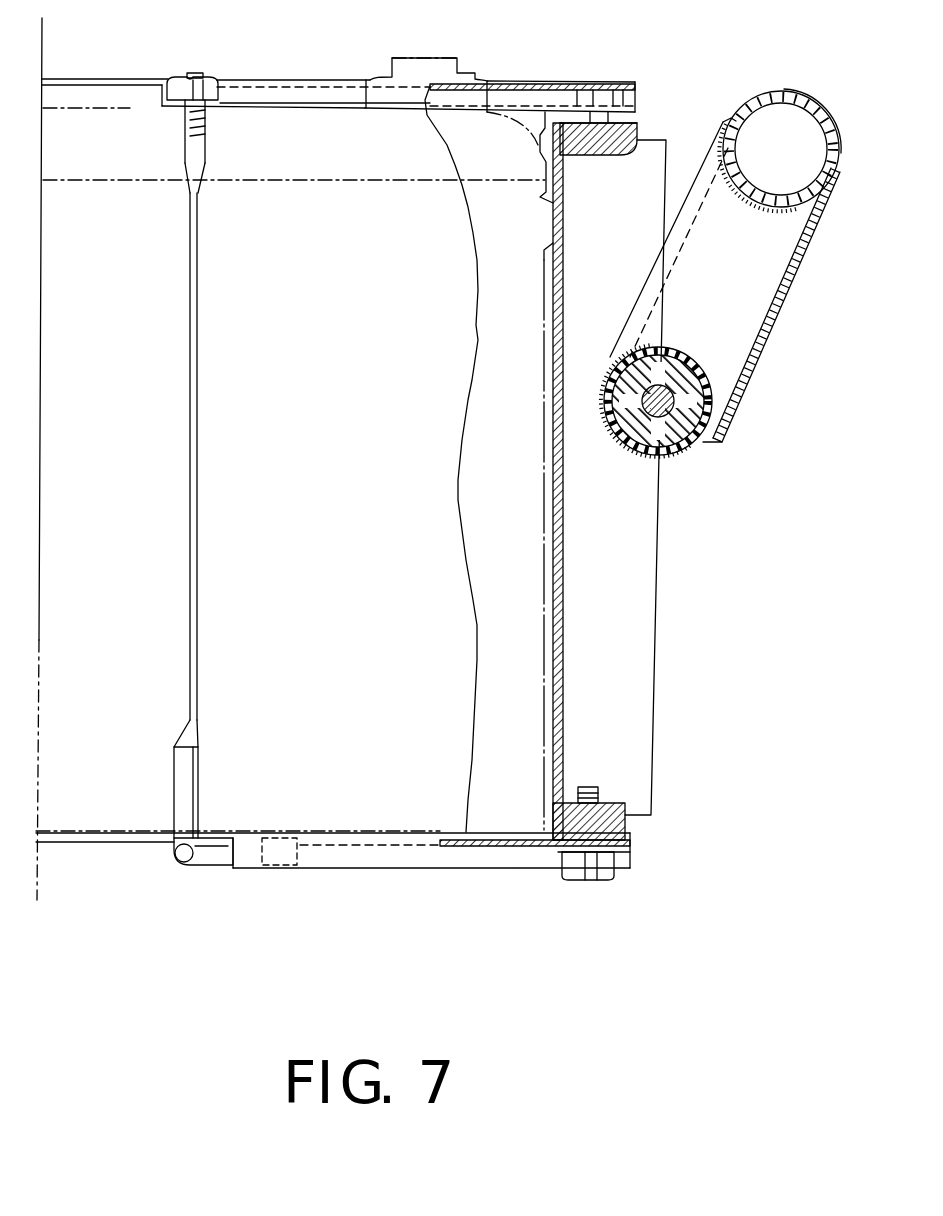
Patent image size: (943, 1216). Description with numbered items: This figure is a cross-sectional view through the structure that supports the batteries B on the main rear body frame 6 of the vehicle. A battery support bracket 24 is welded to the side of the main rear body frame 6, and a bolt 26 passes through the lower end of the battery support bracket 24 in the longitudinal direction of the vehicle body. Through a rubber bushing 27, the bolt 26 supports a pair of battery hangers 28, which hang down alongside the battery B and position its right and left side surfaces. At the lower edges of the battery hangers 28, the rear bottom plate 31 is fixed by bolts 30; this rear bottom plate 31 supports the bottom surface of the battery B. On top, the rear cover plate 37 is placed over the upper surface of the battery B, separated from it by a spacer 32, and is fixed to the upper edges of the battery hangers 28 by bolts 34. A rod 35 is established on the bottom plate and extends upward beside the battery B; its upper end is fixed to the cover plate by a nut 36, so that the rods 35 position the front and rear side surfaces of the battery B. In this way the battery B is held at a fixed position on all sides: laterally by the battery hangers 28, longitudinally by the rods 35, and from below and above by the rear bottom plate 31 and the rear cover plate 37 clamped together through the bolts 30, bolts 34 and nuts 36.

The main rear body frame 6 is at (802, 94).
The battery support bracket 24 is at (738, 305).
The bolt 26 is at (713, 393).
The rubber bushing 27 is at (690, 443).
The battery hanger 28 is at (618, 628).
The bolt 30 is at (582, 874).
The rear bottom plate 31 is at (422, 863).
The spacer 32 is at (545, 112).
The bolt 34 is at (622, 76).
The rod 35 is at (200, 483).
The nut 36 is at (183, 90).
The rear cover plate 37 is at (303, 88).
The battery B is at (537, 848).